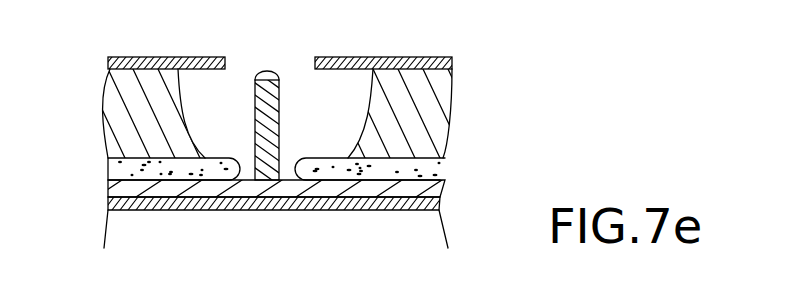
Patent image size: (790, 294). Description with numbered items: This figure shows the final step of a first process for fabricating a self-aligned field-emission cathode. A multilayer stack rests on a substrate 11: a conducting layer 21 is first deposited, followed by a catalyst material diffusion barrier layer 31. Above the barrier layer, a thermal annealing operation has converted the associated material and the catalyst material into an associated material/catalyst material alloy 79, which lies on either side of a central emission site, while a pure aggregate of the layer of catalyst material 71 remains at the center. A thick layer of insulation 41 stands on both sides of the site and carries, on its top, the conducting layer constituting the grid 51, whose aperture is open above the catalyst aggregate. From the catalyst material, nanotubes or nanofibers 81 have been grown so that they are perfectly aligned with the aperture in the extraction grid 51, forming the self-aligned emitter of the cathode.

The substrate 11 is at (138, 225).
The conducting layer 21 is at (128, 203).
The catalyst material diffusion barrier layer 31 is at (128, 190).
The associated material/catalyst material alloy 79 is at (110, 168).
The thick layer of insulation 41 is at (122, 103).
The grid 51 is at (130, 57).
The layer of catalyst material 71 is at (275, 68).
The nanotubes or nanofibers 81 is at (270, 112).